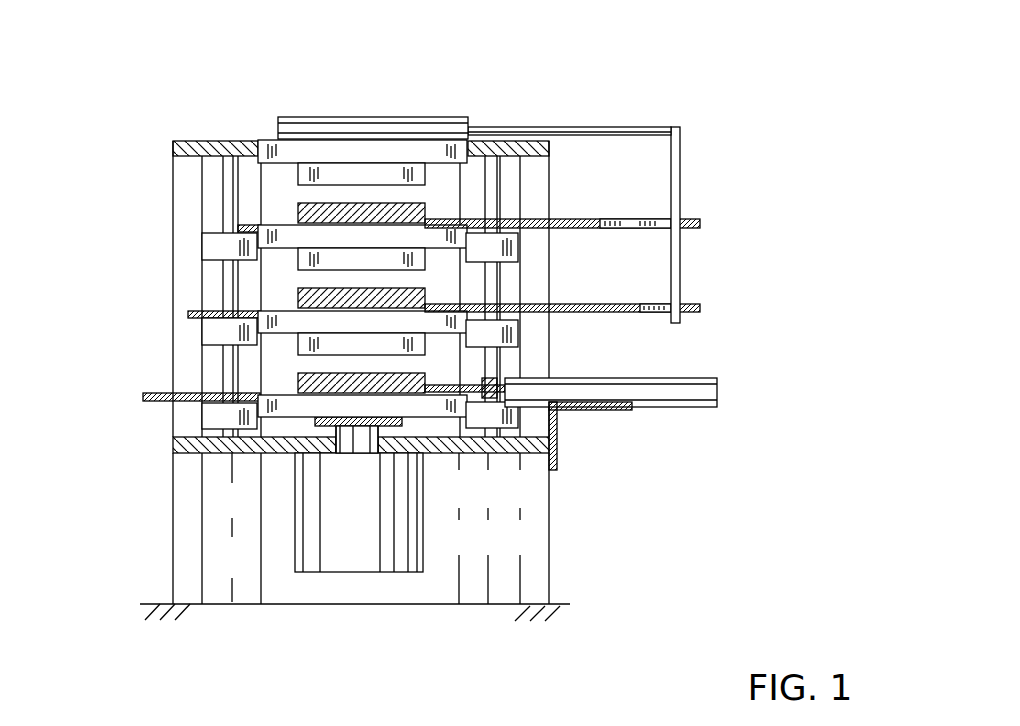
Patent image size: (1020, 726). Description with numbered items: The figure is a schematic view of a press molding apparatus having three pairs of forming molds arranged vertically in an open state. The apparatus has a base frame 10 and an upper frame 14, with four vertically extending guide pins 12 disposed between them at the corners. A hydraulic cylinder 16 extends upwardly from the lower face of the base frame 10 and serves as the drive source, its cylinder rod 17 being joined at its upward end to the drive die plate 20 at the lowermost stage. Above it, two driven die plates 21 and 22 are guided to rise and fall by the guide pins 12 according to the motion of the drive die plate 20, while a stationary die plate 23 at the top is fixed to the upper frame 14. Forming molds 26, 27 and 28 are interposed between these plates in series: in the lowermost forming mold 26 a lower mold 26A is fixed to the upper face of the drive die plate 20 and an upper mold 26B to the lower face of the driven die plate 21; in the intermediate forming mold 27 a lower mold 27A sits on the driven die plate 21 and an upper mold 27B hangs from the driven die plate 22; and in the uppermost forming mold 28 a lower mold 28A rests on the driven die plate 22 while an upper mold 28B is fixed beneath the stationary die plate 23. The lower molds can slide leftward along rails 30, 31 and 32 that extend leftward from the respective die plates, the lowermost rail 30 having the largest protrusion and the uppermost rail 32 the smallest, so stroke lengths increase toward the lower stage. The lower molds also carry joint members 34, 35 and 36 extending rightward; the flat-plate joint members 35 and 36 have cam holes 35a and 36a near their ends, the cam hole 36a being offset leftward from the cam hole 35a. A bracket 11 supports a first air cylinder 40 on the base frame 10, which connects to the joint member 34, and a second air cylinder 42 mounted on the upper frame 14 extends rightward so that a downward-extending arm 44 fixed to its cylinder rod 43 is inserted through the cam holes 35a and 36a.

The base frame 10 is at (190, 518).
The bracket 11 is at (575, 412).
The guide pins 12 is at (228, 160).
The upper frame 14 is at (505, 142).
The hydraulic cylinder 16 is at (322, 543).
The cylinder rod 17 is at (353, 444).
The drive die plate 20 is at (278, 420).
The driven die plate 21 is at (430, 323).
The driven die plate 22 is at (430, 245).
The stationary die plate 23 is at (365, 140).
The forming mold 26 is at (230, 371).
The lower mold 26A is at (300, 388).
The upper mold 26B is at (303, 347).
The forming mold 27 is at (236, 278).
The lower mold 27A is at (300, 302).
The upper mold 27B is at (305, 258).
The forming mold 28 is at (233, 180).
The lower mold 28A is at (297, 215).
The upper mold 28B is at (308, 172).
The rail 30 is at (157, 403).
The rail 31 is at (190, 314).
The rail 32 is at (240, 228).
The joint member 34 is at (470, 440).
The joint member 35 is at (598, 313).
The cam hole 35a is at (652, 305).
The joint member 36 is at (563, 230).
The cam hole 36a is at (628, 220).
The first air cylinder 40 is at (683, 383).
The second air cylinder 42 is at (412, 125).
The cylinder rod 43 is at (578, 126).
The arm 44 is at (681, 247).